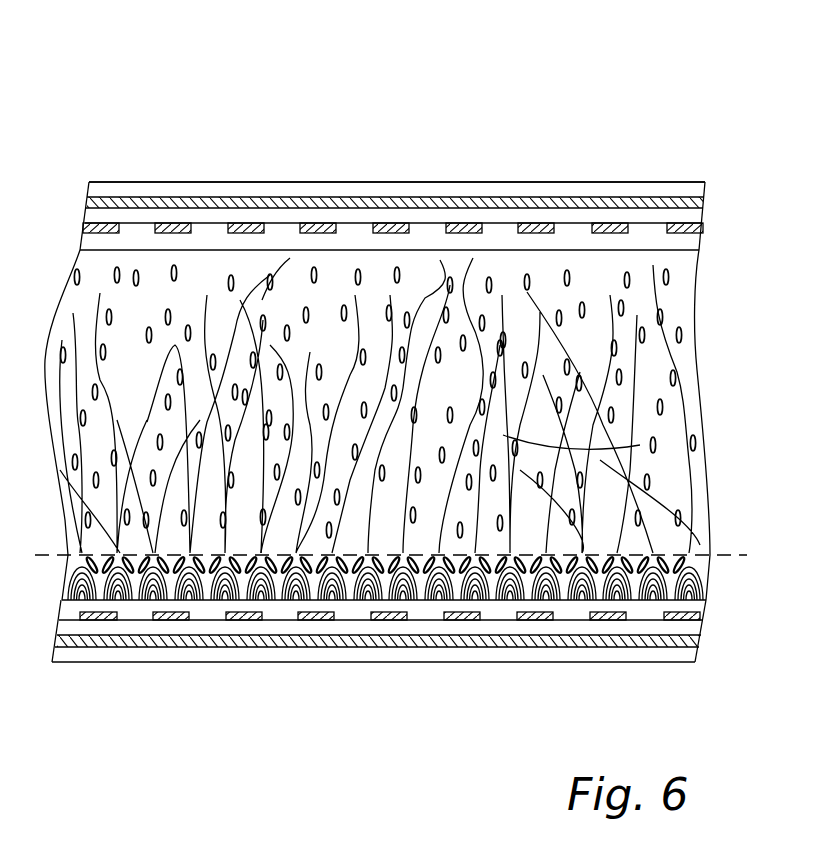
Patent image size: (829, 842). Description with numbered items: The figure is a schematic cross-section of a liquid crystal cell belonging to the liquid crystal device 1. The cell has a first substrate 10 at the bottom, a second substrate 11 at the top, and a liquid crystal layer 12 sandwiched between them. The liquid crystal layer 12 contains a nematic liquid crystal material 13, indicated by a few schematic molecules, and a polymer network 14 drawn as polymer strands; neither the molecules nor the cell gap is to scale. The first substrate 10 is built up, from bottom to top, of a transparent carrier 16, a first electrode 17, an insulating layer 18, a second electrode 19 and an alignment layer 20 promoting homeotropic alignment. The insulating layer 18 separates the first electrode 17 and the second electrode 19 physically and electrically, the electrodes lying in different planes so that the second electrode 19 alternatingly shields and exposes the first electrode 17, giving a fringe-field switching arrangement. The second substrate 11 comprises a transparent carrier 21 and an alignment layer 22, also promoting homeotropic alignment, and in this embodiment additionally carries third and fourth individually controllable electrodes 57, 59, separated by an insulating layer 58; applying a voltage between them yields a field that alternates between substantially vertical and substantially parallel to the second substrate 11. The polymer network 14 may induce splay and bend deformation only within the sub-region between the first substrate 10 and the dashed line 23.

The liquid crystal device 1 is at (548, 68).
The first substrate 10 is at (724, 625).
The second substrate 11 is at (745, 230).
The liquid crystal layer 12 is at (727, 378).
The nematic liquid crystal material 13 is at (531, 281).
The polymer network 14 is at (640, 445).
The transparent carrier 16 is at (72, 655).
The first electrode 17 is at (158, 640).
The insulating layer 18 is at (242, 630).
The second electrode 19 is at (313, 617).
The alignment layer 20 is at (708, 610).
The transparent carrier 21 is at (183, 190).
The alignment layer 22 is at (78, 240).
The dashed line 23 is at (735, 556).
The third electrode 57 is at (668, 206).
The insulating layer 58 is at (538, 216).
The fourth electrode 59 is at (464, 222).